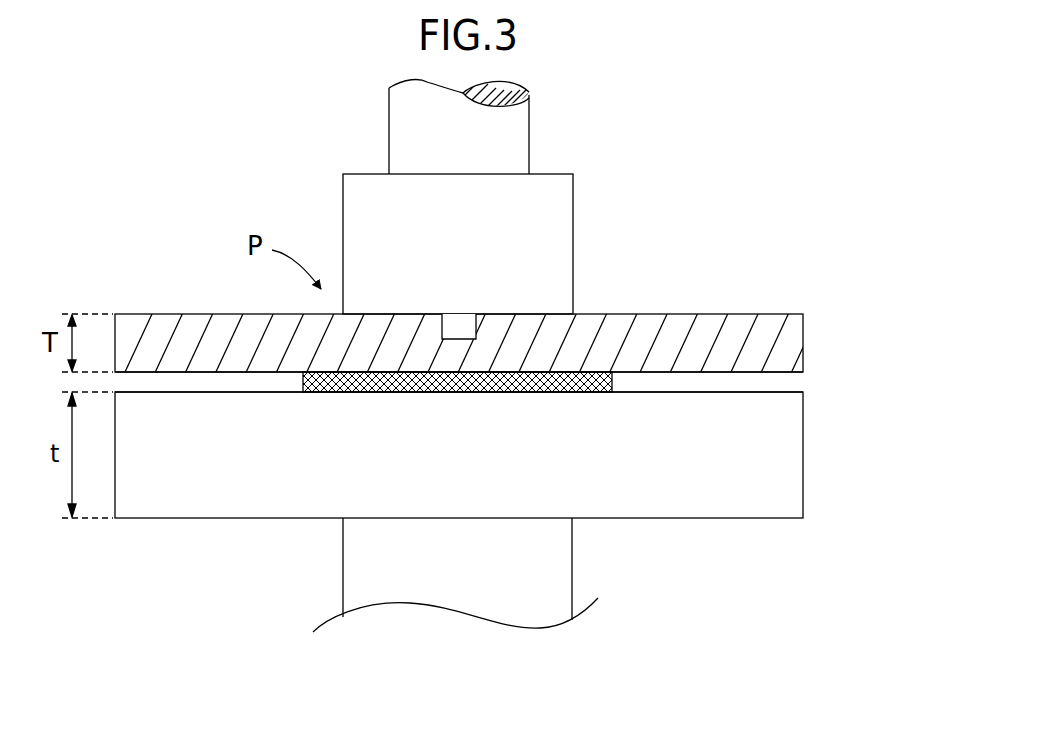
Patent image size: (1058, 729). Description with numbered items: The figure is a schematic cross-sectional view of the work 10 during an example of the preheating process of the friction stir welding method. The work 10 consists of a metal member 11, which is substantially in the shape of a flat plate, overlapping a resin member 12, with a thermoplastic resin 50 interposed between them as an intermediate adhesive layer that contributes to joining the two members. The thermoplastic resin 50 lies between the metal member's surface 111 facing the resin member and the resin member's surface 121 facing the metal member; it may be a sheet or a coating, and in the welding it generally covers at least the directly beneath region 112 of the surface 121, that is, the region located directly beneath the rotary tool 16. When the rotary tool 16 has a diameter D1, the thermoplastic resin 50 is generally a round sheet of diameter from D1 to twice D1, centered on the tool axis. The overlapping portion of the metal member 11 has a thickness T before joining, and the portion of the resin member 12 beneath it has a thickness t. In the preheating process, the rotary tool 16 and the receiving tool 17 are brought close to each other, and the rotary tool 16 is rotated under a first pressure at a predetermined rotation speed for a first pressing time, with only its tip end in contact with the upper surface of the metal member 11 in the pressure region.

The work 10 is at (738, 172).
The metal member 11 is at (797, 350).
The metal member's surface facing resin member 111 is at (783, 366).
The directly beneath region 112 is at (572, 402).
The resin member 12 is at (787, 457).
The resin member's surface facing metal member 121 is at (725, 393).
The rotary tool 16 is at (567, 240).
The receiving tool 17 is at (557, 563).
The thermoplastic resin 50 is at (592, 395).